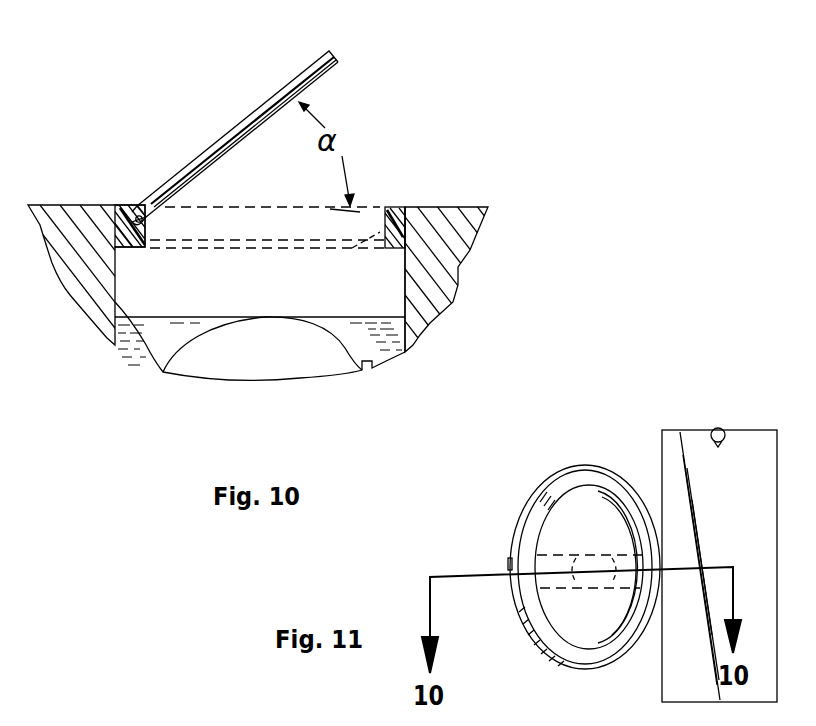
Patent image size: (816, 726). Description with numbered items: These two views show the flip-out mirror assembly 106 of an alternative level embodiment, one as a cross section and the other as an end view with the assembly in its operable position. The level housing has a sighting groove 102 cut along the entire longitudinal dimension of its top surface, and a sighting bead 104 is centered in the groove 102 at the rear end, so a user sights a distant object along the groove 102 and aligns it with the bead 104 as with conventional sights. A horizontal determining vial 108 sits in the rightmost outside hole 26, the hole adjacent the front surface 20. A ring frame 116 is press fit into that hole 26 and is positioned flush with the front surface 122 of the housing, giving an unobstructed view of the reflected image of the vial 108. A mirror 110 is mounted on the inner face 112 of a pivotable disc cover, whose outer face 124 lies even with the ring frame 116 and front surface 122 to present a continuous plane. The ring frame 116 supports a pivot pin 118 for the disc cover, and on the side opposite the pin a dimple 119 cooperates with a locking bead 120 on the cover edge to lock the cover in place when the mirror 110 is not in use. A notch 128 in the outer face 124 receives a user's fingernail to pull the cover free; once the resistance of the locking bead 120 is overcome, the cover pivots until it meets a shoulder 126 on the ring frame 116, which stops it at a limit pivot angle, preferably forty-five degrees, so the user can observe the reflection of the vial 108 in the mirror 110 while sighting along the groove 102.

In FIG. 10, the front surface 20 is at (815, 43).
In FIG. 11, the front surface 20 is at (749, 502).
In FIG. 10, the outside hole 26 is at (135, 363).
In FIG. 11, the sighting groove 102 is at (727, 443).
In FIG. 11, the sighting bead 104 is at (717, 427).
In FIG. 10, the flip-out mirror assembly 106 is at (460, 96).
In FIG. 10, the horizontal determining vial 108 is at (373, 333).
In FIG. 11, the horizontal determining vial 108 is at (600, 583).
In FIG. 10, the mirror 110 is at (305, 101).
In FIG. 11, the mirror 110 is at (590, 508).
In FIG. 10, the inner face 112 is at (167, 206).
In FIG. 10, the ring frame 116 is at (405, 228).
In FIG. 10, the pivot pin 118 is at (148, 227).
In FIG. 10, the dimple 119 is at (392, 207).
In FIG. 10, the locking bead 120 is at (362, 244).
In FIG. 11, the locking bead 120 is at (508, 553).
In FIG. 10, the front surface 122 is at (460, 206).
In FIG. 10, the outer face 124 is at (192, 161).
In FIG. 10, the shoulder 126 is at (136, 209).
In FIG. 10, the notch 128 is at (297, 78).